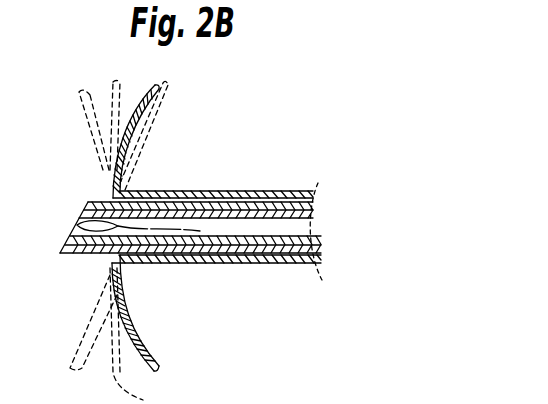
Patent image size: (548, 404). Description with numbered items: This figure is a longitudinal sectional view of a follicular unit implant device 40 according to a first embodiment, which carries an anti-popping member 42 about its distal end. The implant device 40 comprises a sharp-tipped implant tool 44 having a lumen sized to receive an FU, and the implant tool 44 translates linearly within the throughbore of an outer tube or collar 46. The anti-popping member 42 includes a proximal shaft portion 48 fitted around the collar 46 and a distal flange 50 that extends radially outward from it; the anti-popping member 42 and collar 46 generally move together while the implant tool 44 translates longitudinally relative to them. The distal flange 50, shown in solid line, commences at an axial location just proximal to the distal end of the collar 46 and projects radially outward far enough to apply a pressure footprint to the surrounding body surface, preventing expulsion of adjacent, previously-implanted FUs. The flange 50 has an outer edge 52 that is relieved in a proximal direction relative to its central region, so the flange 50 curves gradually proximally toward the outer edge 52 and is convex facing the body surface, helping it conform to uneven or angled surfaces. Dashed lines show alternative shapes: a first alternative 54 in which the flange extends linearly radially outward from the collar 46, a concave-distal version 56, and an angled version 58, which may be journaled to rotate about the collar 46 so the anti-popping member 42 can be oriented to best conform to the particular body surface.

The FU implant device 40 is at (166, 226).
The anti-popping member 42 is at (101, 164).
The implant tool 44 is at (83, 246).
The collar 46 is at (106, 201).
The proximal shaft portion 48 is at (268, 263).
The distal flange 50 is at (141, 330).
The outer edge 52 is at (157, 372).
The first alternative flange 54 is at (143, 336).
The concave-distal flange version 56 is at (100, 97).
The angled flange version 58 is at (157, 120).
The follicular unit FU is at (77, 224).